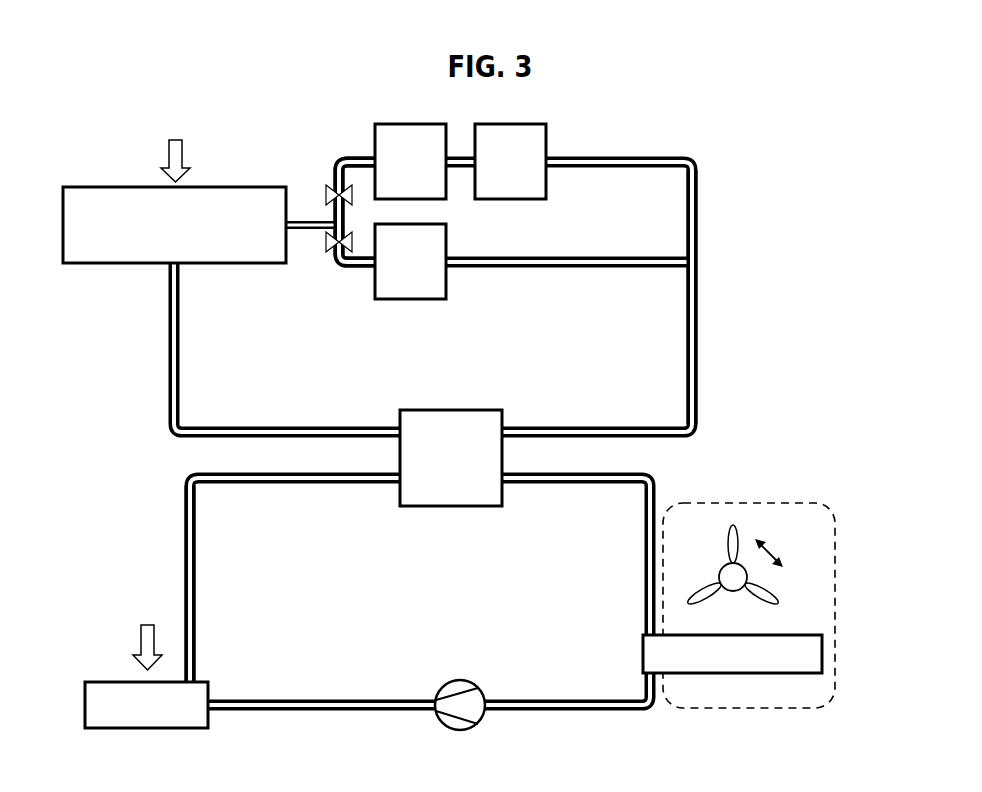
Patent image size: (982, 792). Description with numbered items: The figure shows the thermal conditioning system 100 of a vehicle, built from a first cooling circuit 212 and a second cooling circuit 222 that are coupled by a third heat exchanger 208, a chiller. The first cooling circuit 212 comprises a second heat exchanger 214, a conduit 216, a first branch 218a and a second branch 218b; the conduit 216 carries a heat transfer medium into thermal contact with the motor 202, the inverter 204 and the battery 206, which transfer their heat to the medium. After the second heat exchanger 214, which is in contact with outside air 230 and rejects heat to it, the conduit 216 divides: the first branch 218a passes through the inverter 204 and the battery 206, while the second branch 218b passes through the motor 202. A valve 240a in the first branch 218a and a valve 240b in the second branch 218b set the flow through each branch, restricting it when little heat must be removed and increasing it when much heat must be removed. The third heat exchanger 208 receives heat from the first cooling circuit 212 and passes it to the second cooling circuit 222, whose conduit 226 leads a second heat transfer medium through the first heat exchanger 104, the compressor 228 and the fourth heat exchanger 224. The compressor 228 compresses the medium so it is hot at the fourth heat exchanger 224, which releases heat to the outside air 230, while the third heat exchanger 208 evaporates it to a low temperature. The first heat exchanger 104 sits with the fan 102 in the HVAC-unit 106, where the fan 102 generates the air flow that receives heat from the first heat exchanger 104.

The thermal conditioning system 100 is at (760, 336).
The fan 102 is at (740, 579).
The first heat exchanger 104 is at (797, 652).
The HVAC-unit 106 is at (805, 502).
The motor 202 is at (410, 261).
The inverter 204 is at (410, 161).
The battery 206 is at (510, 161).
The third heat exchanger 208 is at (451, 458).
The first cooling circuit 212 is at (433, 297).
The second heat exchanger 214 is at (174, 225).
The conduit 216 is at (698, 240).
The first branch 218a is at (336, 166).
The second branch 218b is at (348, 268).
The second cooling circuit 222 is at (420, 591).
The fourth heat exchanger 224 is at (146, 705).
The conduit 226 is at (183, 543).
The compressor 228 is at (462, 730).
The outside air 230 is at (142, 398).
The valve 240a is at (327, 190).
The valve 240b is at (330, 248).